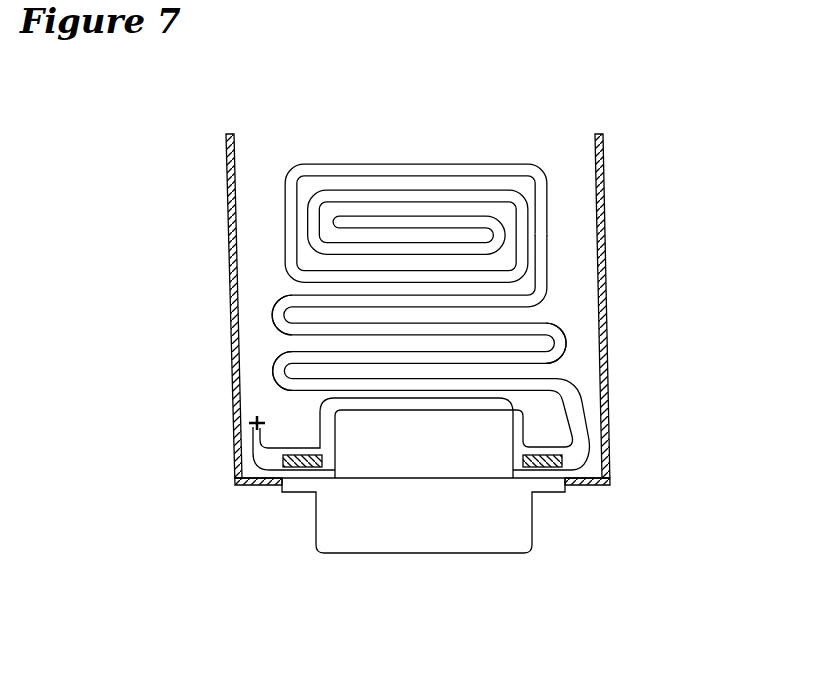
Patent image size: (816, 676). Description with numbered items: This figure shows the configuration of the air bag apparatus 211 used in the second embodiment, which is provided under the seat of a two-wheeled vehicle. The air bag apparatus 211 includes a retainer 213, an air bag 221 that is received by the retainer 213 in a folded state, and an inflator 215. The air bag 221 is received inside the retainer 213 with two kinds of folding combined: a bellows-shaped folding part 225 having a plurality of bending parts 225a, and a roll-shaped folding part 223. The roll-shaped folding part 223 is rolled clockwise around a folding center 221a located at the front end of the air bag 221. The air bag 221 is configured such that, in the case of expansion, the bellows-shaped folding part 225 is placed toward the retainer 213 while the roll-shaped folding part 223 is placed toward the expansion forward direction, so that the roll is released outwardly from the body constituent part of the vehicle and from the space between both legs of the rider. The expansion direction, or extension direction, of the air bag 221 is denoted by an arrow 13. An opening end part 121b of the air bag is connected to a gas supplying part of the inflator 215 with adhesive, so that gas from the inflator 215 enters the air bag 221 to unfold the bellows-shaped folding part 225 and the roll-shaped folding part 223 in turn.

The arrow 13 is at (399, 120).
The opening end part 121b is at (596, 420).
The air bag apparatus 211 is at (486, 281).
The retainer 213 is at (607, 362).
The inflator 215 is at (449, 552).
The air bag 221 is at (500, 170).
The folding center 221a is at (341, 220).
The roll-shaped folding part 223 is at (423, 226).
The bellows-shaped folding part 225 is at (423, 311).
The bending parts 225a is at (273, 370).